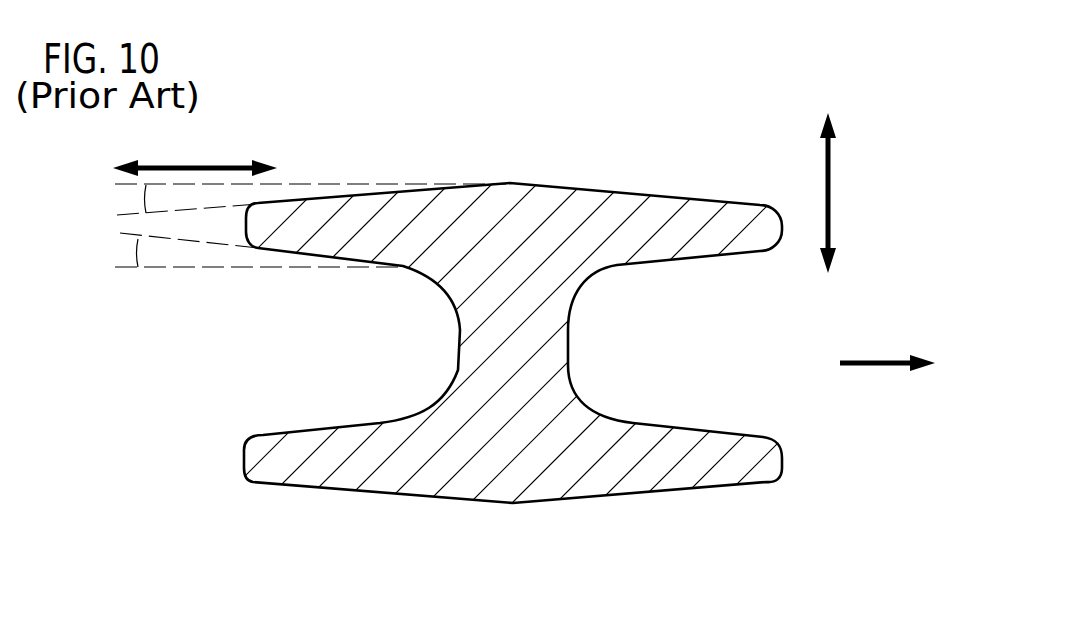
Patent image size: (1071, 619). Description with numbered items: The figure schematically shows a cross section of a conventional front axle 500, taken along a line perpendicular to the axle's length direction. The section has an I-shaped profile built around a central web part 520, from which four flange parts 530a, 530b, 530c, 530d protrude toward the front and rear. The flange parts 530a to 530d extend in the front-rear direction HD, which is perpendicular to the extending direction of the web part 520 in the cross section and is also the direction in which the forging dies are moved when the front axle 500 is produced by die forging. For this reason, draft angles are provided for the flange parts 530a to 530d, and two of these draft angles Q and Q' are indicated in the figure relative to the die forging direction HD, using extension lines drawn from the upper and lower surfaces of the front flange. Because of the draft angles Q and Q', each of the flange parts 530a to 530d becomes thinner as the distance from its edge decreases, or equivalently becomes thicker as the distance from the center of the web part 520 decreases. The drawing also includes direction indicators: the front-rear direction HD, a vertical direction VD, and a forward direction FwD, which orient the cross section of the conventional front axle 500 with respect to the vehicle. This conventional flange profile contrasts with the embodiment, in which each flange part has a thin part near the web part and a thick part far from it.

The front axle 500 is at (309, 134).
The web part 520 is at (553, 340).
The flange part 530a is at (677, 237).
The flange part 530b is at (683, 460).
The flange part 530c is at (343, 235).
The flange part 530d is at (337, 460).
The draft angle Q is at (109, 196).
The draft angle Q' is at (100, 250).
The front-rear direction HD is at (195, 155).
The vertical direction VD is at (843, 193).
The forward direction FwD is at (887, 349).